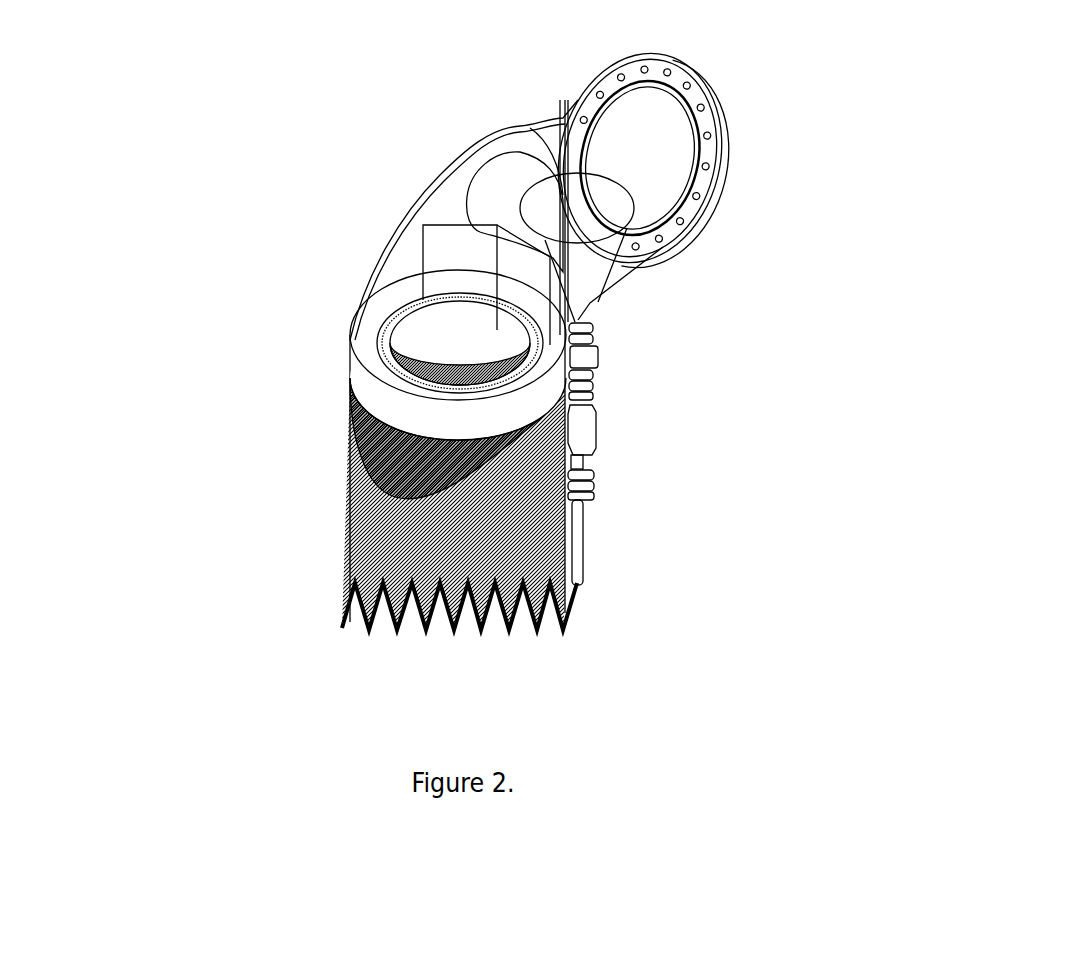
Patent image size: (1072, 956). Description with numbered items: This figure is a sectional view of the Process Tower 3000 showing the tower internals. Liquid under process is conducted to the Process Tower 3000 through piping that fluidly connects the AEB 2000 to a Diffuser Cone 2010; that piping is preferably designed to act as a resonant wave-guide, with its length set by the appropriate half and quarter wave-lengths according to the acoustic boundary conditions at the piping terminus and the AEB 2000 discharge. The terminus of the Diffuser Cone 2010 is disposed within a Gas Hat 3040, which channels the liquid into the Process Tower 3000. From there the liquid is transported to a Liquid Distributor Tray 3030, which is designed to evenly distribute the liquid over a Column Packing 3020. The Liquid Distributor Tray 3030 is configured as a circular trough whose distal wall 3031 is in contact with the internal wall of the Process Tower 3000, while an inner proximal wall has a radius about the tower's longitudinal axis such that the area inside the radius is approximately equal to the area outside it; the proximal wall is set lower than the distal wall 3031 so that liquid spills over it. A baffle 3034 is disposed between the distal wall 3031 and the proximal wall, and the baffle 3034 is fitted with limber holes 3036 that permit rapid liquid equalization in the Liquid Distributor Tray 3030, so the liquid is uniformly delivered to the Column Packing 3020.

The Process Tower 3000 is at (445, 197).
The baffle 3034 is at (445, 245).
The distal wall 3031 is at (373, 315).
The Liquid Distributor Tray 3030 is at (347, 408).
The Column Packing 3020 is at (347, 483).
The Gas Hat 3040 is at (635, 175).
The Diffuser Cone 2010 is at (590, 293).
The limber holes 3036 is at (597, 348).
The AEB 2000 is at (597, 422).